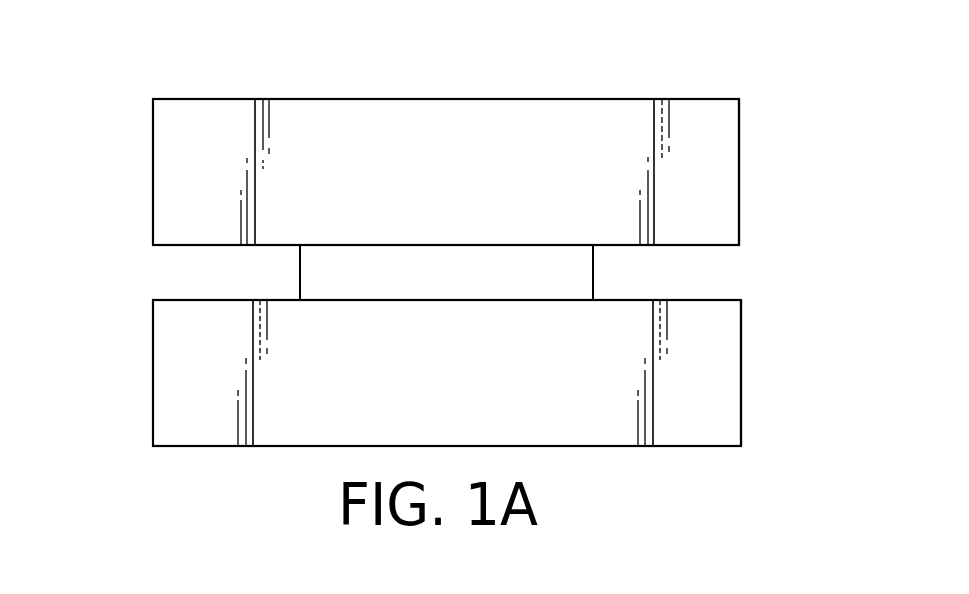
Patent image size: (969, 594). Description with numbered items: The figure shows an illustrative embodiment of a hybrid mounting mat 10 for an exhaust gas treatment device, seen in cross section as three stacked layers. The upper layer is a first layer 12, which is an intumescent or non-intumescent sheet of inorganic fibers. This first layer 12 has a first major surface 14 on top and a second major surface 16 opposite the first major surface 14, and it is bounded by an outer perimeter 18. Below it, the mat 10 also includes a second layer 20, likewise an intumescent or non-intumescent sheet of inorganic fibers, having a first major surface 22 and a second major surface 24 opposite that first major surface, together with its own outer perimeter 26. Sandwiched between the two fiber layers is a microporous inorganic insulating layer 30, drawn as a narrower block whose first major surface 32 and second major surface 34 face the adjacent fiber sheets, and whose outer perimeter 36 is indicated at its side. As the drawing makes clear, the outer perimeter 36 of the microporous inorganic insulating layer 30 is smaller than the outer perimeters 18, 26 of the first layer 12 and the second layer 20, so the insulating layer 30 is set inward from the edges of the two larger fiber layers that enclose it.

The hybrid mounting mat 10 is at (140, 60).
The first layer 12 is at (458, 185).
The first major surface 14 is at (443, 99).
The second major surface 16 is at (704, 245).
The outer perimeter 18 is at (739, 165).
The second layer 20 is at (459, 378).
The first major surface 22 is at (177, 299).
The second major surface 24 is at (573, 447).
The outer perimeter 26 is at (741, 377).
The microporous inorganic insulating layer 30 is at (460, 283).
The first major surface 32 is at (525, 244).
The second major surface 34 is at (380, 300).
The outer perimeter 36 is at (593, 263).